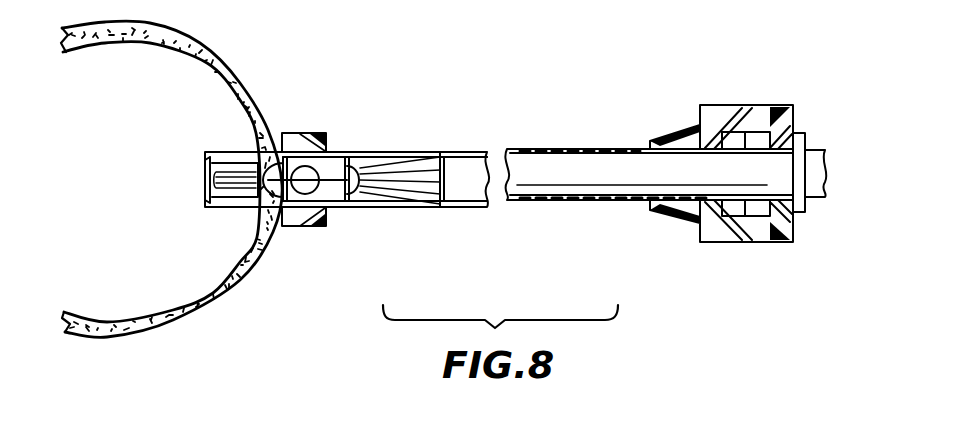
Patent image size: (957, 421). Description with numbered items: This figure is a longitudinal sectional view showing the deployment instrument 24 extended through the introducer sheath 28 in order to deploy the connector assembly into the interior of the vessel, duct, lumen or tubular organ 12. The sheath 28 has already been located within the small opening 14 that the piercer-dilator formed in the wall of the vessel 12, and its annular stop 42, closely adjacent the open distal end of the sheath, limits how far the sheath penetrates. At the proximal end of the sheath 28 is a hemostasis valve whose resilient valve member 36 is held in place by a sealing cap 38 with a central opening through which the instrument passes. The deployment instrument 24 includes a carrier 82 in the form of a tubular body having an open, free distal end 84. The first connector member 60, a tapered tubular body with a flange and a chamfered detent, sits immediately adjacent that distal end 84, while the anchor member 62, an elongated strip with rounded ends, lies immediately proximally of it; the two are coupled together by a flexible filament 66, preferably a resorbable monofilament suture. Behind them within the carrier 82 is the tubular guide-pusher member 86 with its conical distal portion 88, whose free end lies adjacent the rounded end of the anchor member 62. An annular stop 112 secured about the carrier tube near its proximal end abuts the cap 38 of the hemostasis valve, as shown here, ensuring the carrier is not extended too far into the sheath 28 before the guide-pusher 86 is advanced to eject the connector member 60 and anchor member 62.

The vessel, duct, lumen or tubular organ 12 is at (205, 45).
The opening 14 is at (257, 228).
The deployment instrument 24 is at (599, 170).
The introducer sheath 28 is at (558, 146).
The valve member 36 is at (760, 130).
The sealing cap 38 is at (783, 238).
The annular stop 42 is at (321, 142).
The first connector member 60 is at (205, 185).
The anchor member 62 is at (333, 192).
The flexible filament 66 is at (258, 153).
The carrier 82 is at (460, 190).
The open distal end 84 is at (207, 162).
The guide-pusher member 86 is at (433, 160).
The conical distal portion 88 is at (383, 170).
The stop 112 is at (800, 132).